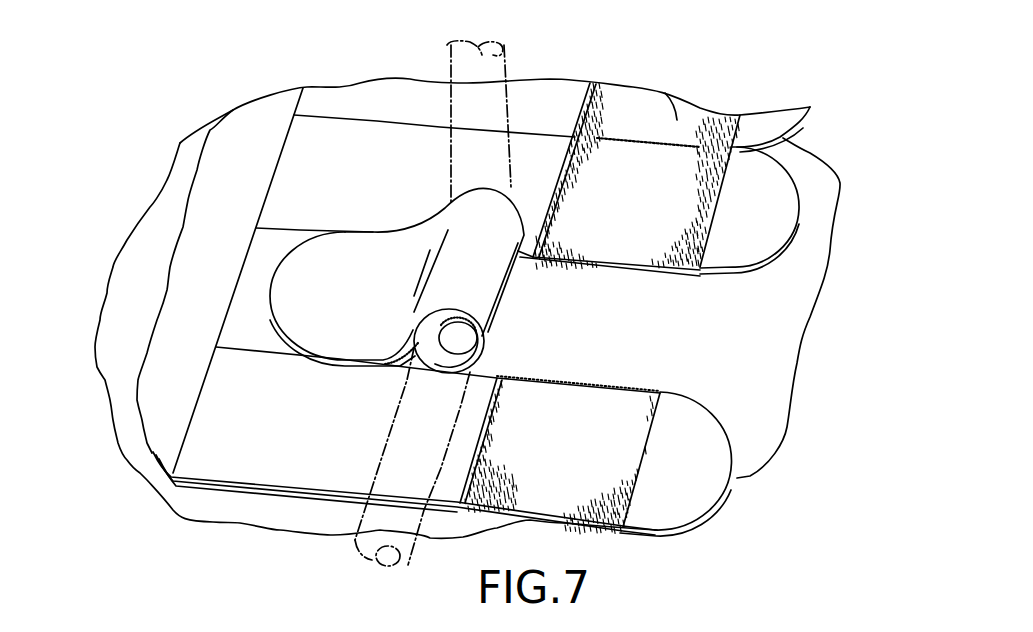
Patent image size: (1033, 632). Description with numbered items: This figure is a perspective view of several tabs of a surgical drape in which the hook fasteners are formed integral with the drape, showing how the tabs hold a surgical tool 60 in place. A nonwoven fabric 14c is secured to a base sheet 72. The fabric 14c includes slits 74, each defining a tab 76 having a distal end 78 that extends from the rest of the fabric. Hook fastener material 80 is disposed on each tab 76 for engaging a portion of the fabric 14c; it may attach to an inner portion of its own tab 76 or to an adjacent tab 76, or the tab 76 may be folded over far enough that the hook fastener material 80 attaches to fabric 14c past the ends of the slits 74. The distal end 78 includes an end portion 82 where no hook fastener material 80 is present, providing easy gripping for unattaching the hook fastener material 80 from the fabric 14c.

The nonwoven fabric 14c is at (227, 155).
The surgical tool 60 is at (447, 51).
The base sheet 72 is at (148, 242).
The slit 74 is at (377, 120).
The tab 76 is at (327, 160).
The distal end 78 is at (810, 113).
The hook fastener material 80 is at (633, 200).
The end portion 82 is at (797, 147).